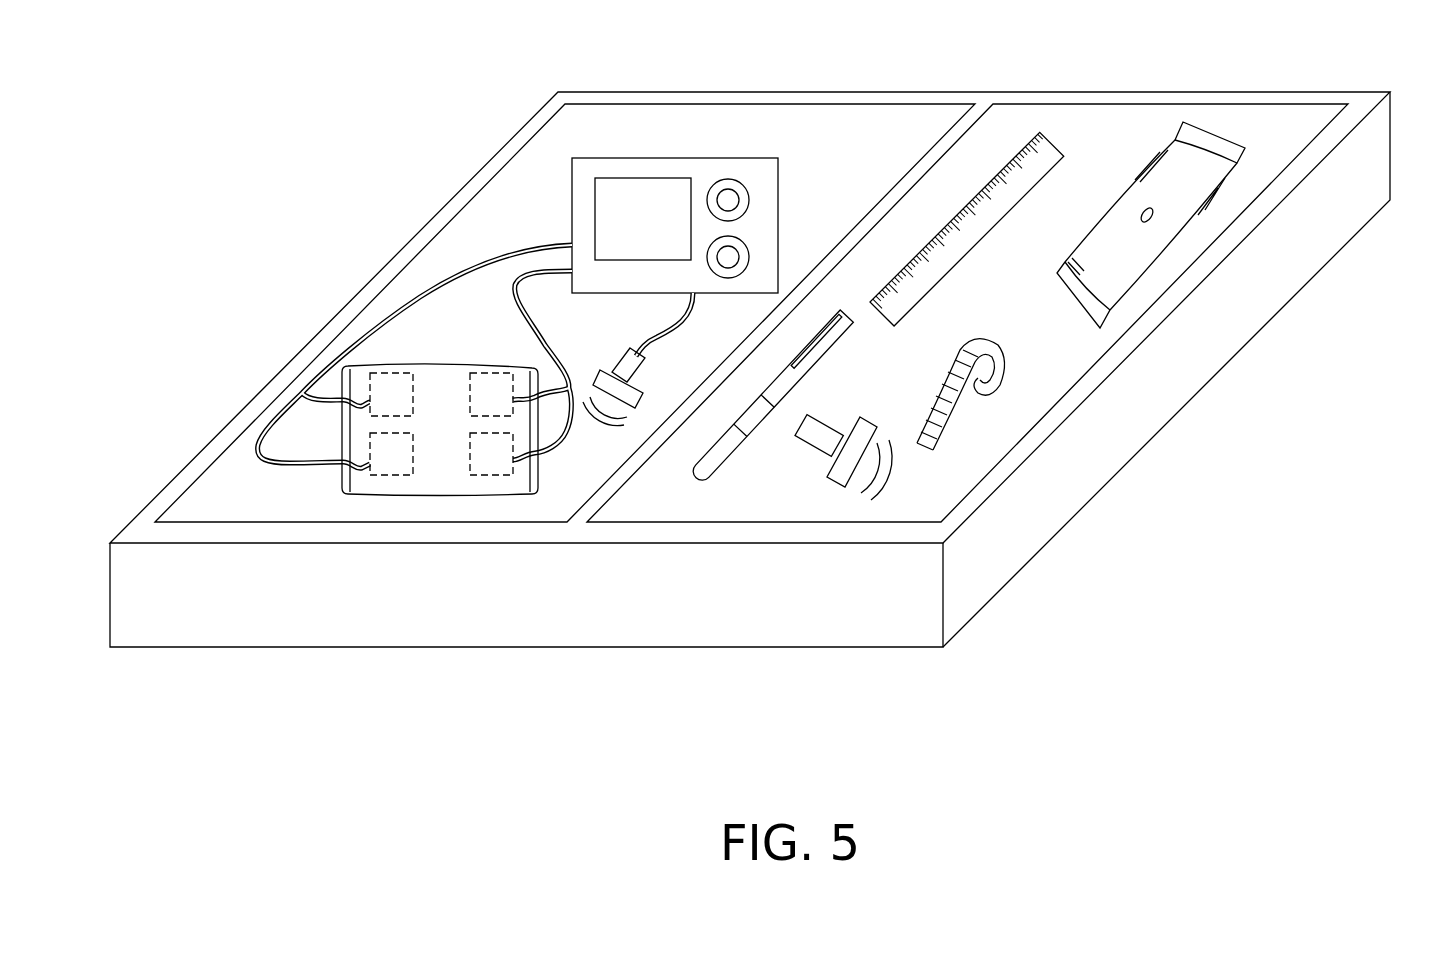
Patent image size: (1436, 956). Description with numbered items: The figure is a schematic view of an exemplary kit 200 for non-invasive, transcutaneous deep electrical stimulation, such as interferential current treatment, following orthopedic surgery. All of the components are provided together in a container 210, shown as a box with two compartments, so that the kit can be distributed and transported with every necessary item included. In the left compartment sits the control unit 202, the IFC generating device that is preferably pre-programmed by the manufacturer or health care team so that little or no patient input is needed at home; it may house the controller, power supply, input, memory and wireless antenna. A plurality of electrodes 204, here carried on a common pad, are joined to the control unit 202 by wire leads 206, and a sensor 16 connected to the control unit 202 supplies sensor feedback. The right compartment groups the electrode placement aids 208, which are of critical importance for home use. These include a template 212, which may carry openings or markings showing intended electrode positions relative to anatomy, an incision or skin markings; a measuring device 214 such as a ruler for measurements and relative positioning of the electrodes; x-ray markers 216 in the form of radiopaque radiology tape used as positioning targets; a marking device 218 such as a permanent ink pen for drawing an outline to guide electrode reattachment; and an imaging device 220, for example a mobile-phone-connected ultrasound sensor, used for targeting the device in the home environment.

The kit 200 is at (396, 212).
The control unit 202 is at (617, 168).
The electrodes 204 is at (400, 462).
The wire leads 206 is at (282, 467).
The sensor 16 is at (623, 368).
The electrode placement aid 208 is at (1350, 66).
The container 210 is at (688, 597).
The template 212 is at (1112, 283).
The measuring device 214 is at (935, 269).
The x-ray markers 216 is at (983, 387).
The marking device 218 is at (810, 358).
The imaging device 220 is at (813, 438).